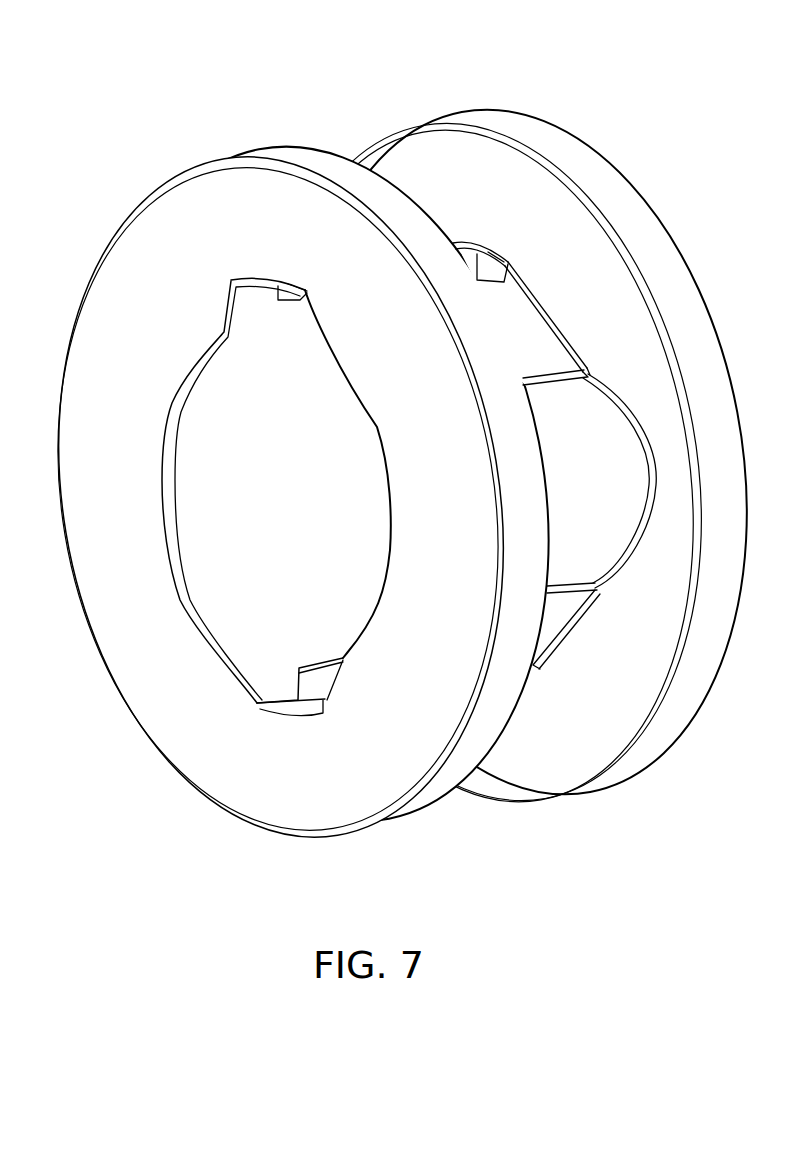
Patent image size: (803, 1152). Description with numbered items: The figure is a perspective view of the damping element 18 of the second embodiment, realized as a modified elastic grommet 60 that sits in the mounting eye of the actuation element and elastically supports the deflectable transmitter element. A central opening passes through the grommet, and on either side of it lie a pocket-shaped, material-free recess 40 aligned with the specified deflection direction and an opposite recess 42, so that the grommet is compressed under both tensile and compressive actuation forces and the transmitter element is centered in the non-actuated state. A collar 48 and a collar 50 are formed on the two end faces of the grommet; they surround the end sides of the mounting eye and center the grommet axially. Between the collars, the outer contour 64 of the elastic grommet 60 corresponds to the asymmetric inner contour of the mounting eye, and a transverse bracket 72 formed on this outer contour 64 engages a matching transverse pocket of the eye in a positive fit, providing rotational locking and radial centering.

The damping element 18 is at (618, 84).
The recess 40 is at (262, 301).
The recess 42 is at (288, 700).
The collar 48 is at (142, 258).
The collar 50 is at (645, 746).
The modified elastic grommet 60 is at (232, 523).
The outer contour 64 is at (517, 320).
The transverse bracket 72 is at (585, 518).